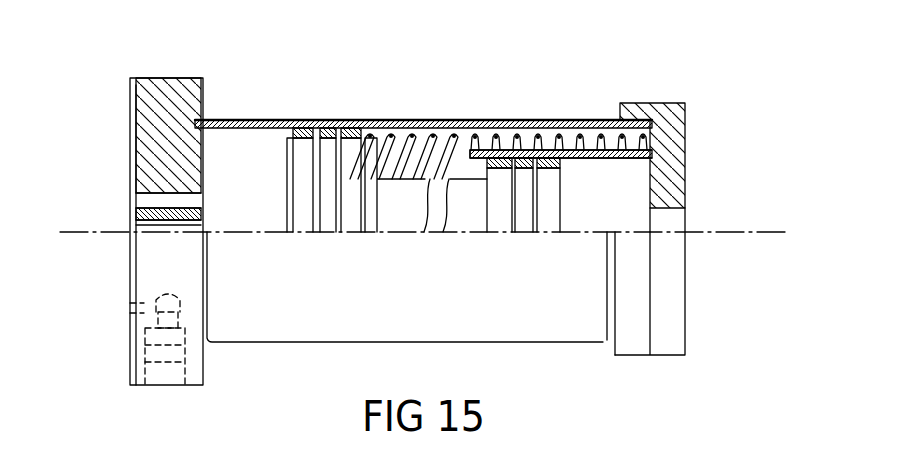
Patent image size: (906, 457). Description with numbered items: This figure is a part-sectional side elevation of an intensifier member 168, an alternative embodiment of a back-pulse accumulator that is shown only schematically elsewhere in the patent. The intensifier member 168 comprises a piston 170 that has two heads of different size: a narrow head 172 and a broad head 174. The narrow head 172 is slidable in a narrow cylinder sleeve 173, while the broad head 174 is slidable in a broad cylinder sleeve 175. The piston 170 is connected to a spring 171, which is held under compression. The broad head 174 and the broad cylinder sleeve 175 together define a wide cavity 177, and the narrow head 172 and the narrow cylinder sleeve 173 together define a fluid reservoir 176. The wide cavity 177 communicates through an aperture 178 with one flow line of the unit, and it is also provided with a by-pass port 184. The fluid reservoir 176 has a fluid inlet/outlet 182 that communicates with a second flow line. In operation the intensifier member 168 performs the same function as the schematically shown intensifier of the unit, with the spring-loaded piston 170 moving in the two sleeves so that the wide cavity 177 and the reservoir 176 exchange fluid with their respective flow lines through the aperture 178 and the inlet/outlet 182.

The intensifier member 168 is at (163, 44).
The piston 170 is at (400, 217).
The spring 171 is at (548, 192).
The narrow head 172 is at (595, 120).
The narrow cylinder sleeve 173 is at (493, 108).
The broad head 174 is at (306, 222).
The broad cylinder sleeve 175 is at (386, 108).
The fluid reservoir 176 is at (636, 197).
The wide cavity 177 is at (244, 155).
The aperture 178 is at (148, 200).
The fluid inlet/outlet 182 is at (675, 222).
The by-pass port 184 is at (145, 306).